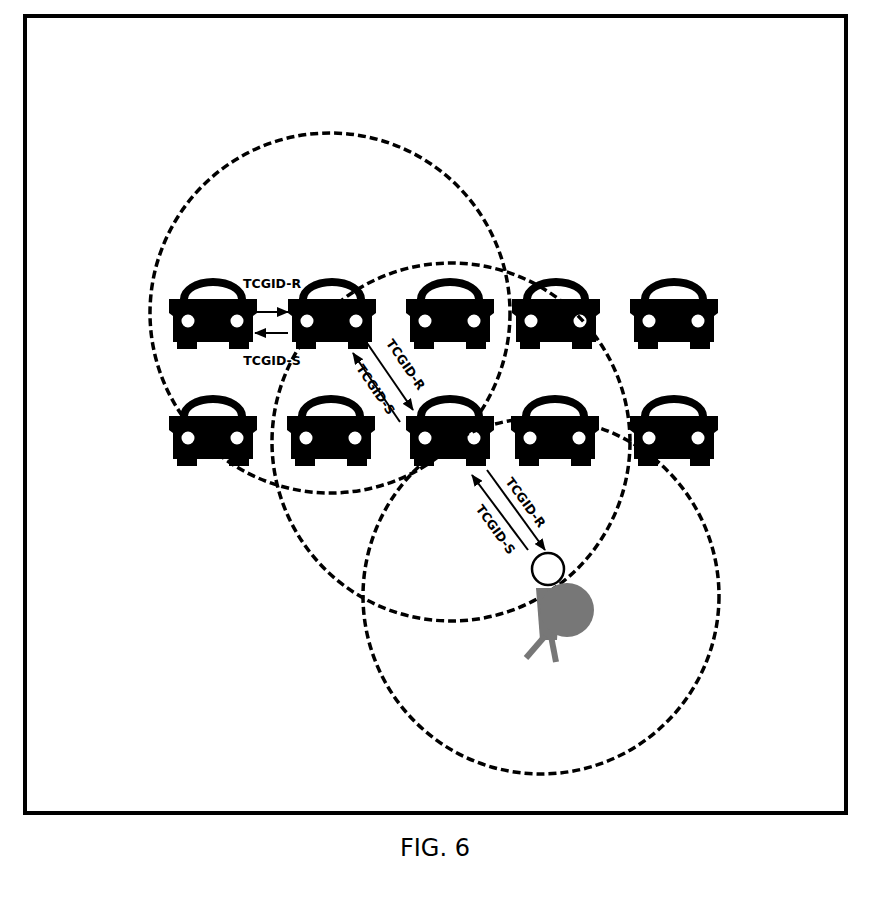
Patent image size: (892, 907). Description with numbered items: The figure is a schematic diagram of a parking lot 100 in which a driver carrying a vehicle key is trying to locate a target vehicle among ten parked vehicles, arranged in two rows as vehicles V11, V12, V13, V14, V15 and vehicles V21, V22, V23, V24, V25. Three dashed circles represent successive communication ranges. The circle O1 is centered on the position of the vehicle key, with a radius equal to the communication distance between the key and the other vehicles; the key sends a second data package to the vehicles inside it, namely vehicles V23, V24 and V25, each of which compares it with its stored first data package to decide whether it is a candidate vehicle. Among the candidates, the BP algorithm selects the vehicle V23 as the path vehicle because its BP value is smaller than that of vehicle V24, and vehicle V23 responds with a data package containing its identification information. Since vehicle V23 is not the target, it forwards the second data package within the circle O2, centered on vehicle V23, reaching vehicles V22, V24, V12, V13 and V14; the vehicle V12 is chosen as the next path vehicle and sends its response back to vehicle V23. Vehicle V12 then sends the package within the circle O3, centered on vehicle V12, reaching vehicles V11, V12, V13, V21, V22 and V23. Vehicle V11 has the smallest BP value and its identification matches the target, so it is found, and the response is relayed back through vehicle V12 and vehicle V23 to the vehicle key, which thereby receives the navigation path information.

The parking lot 100 is at (88, 88).
The vehicle V11 is at (213, 289).
The vehicle V12 is at (332, 289).
The vehicle V13 is at (450, 289).
The vehicle V14 is at (556, 289).
The vehicle V15 is at (674, 289).
The vehicle V21 is at (213, 453).
The vehicle V22 is at (331, 453).
The vehicle V23 is at (450, 453).
The vehicle V24 is at (555, 453).
The vehicle V25 is at (674, 453).
The circle O1 is at (349, 288).
The circle O2 is at (462, 411).
The circle O3 is at (565, 607).